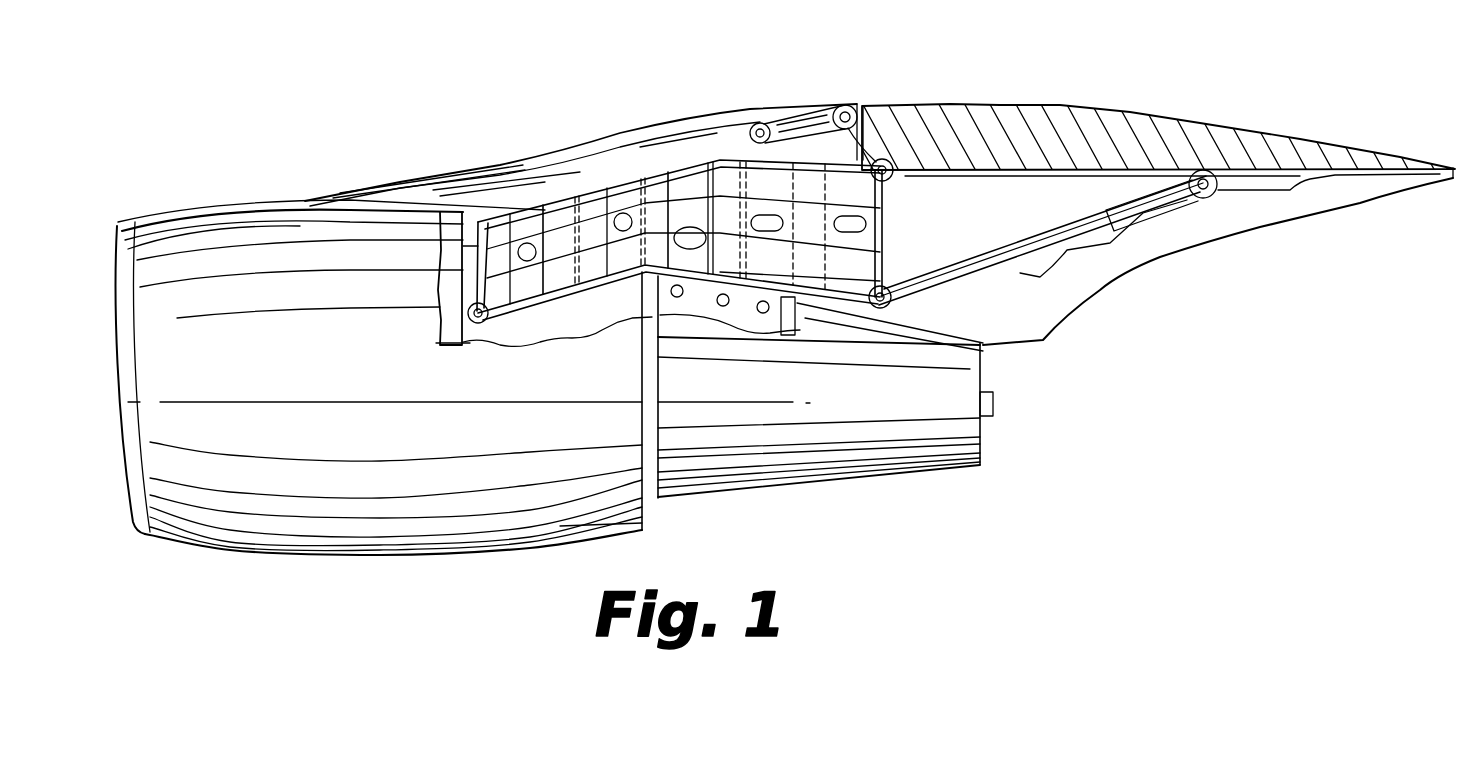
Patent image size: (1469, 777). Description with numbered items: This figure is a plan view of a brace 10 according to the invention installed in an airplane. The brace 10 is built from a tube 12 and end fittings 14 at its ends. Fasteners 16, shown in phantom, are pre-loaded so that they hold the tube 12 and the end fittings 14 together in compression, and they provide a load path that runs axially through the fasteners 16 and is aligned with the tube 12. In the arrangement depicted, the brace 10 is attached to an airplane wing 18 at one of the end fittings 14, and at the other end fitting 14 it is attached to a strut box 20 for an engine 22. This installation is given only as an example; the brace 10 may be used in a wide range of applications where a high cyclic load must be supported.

The brace 10 is at (1014, 285).
The tube 12 is at (1037, 233).
The end fittings 14 is at (1185, 183).
The fasteners 16 is at (1056, 262).
The airplane wing 18 is at (1052, 104).
The strut box 20 is at (622, 170).
The engine 22 is at (486, 570).